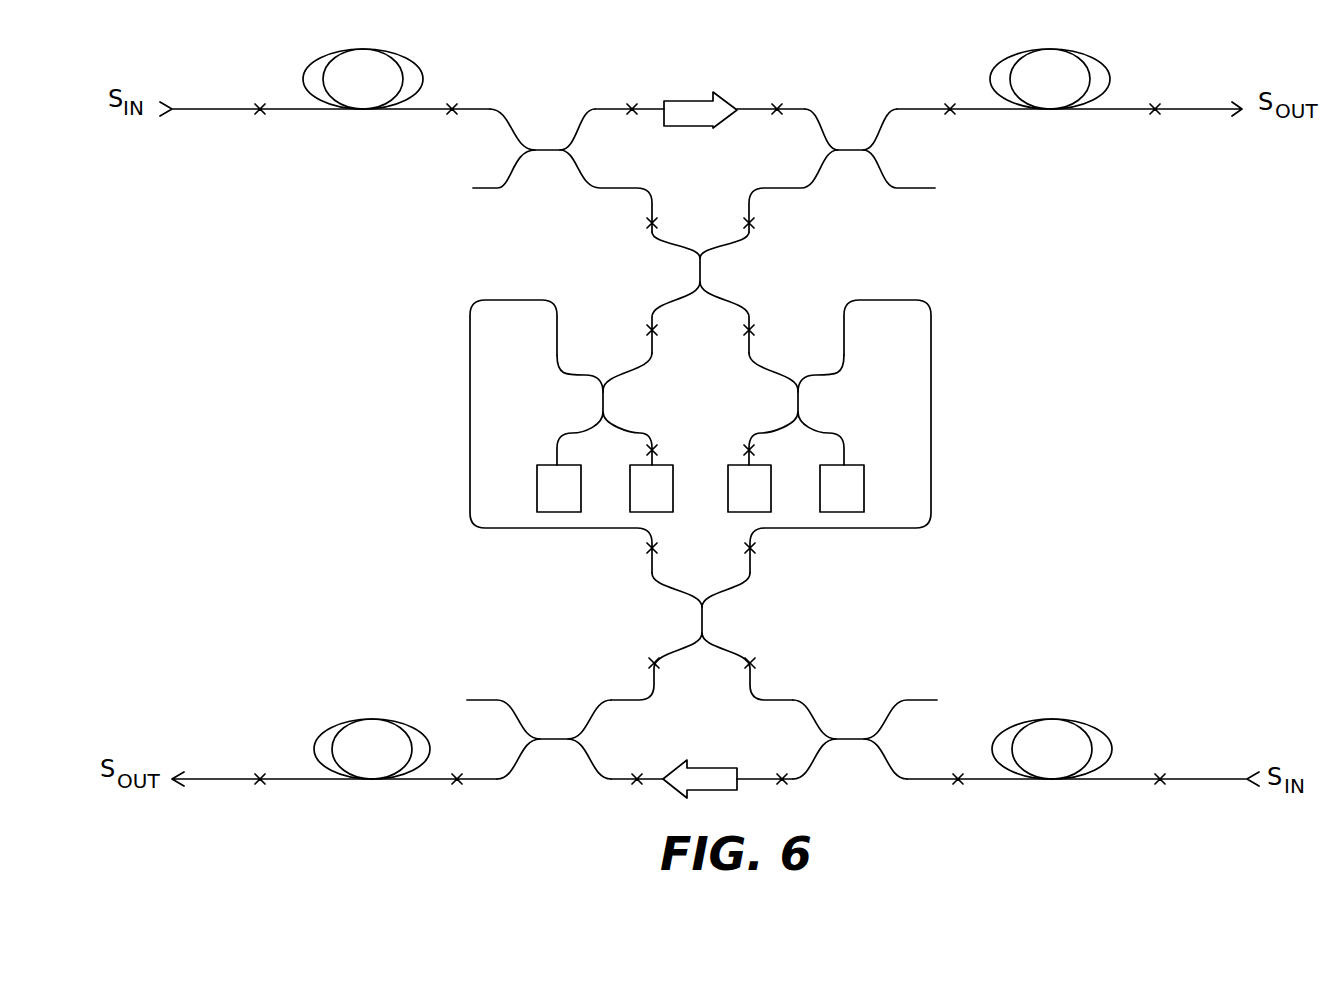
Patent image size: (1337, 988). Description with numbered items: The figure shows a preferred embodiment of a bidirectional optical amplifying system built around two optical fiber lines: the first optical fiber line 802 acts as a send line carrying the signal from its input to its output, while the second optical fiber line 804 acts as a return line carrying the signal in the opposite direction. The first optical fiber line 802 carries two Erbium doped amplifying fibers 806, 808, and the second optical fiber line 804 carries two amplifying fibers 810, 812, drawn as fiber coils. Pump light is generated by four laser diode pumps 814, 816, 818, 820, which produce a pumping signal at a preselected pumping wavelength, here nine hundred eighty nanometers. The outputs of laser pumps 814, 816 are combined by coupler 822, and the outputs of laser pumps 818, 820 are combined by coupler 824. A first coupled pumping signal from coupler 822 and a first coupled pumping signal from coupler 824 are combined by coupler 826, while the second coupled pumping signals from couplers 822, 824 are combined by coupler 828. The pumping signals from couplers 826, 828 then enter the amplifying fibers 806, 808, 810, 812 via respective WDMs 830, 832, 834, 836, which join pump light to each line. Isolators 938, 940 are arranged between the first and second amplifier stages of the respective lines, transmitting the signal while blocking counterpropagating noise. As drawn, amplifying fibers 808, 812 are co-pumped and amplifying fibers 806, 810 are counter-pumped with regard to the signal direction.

The first optical fiber line 802 is at (188, 109).
The second optical fiber line 804 is at (190, 779).
The amplifying fiber 806 is at (365, 50).
The amplifying fiber 808 is at (1048, 48).
The amplifying fiber 810 is at (1052, 719).
The amplifying fiber 812 is at (372, 719).
The laser pump 814 is at (539, 467).
The laser pump 816 is at (660, 470).
The laser pump 818 is at (737, 504).
The laser pump 820 is at (855, 467).
The coupler 822 is at (617, 400).
The coupler 824 is at (818, 402).
The coupler 826 is at (722, 270).
The coupler 828 is at (728, 623).
The WDM 830 is at (548, 142).
The WDM 832 is at (848, 142).
The WDM 834 is at (853, 727).
The WDM 836 is at (553, 725).
The isolator 938 is at (690, 107).
The isolator 940 is at (695, 770).